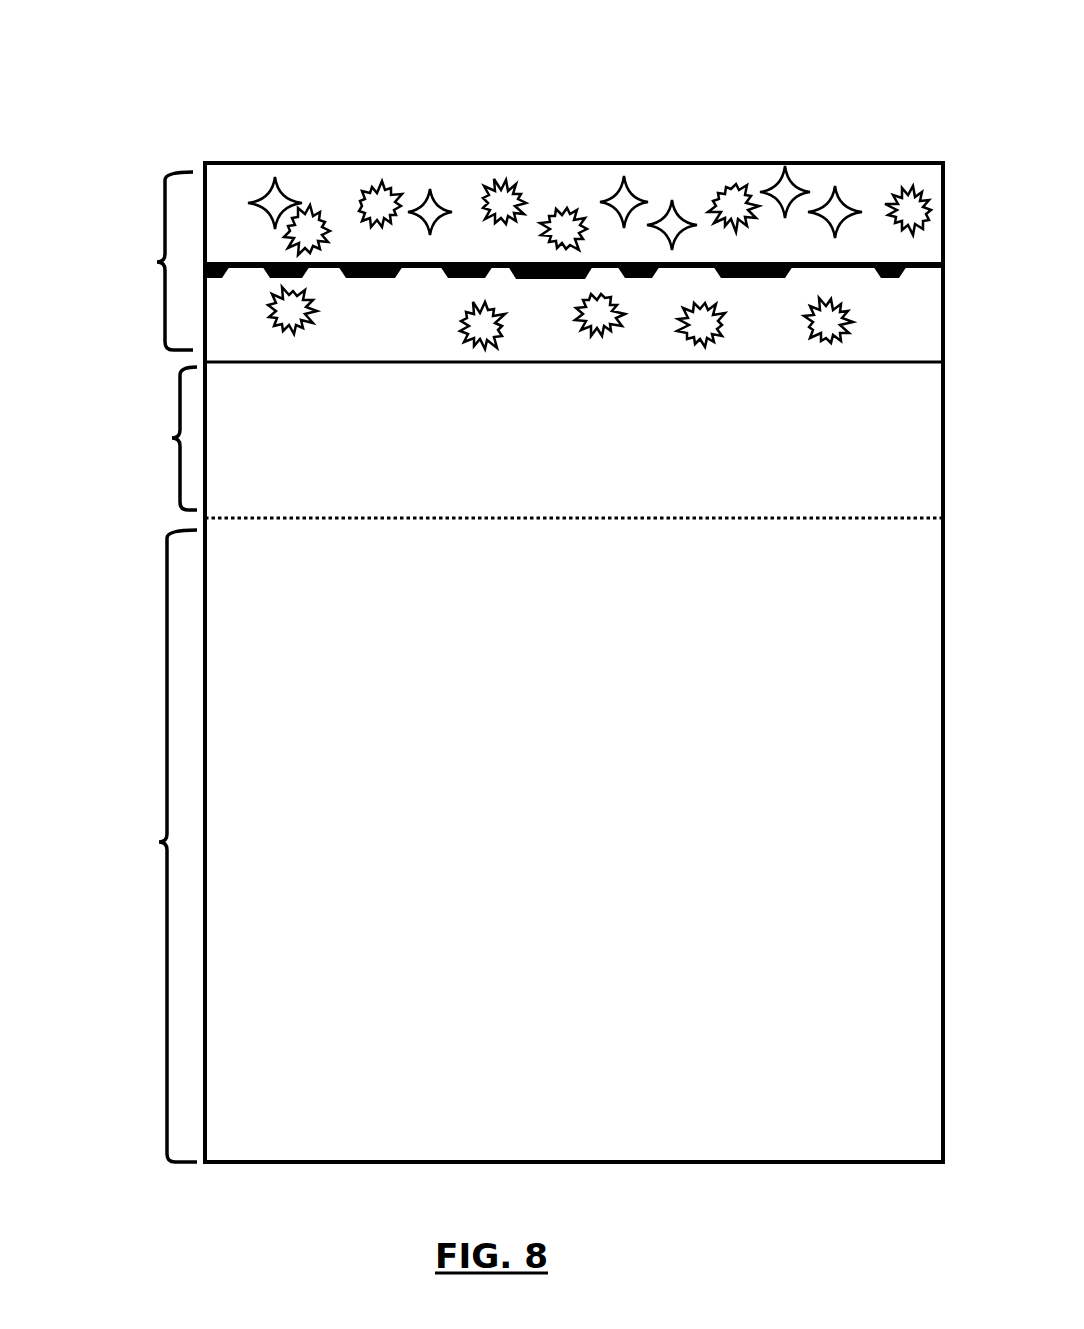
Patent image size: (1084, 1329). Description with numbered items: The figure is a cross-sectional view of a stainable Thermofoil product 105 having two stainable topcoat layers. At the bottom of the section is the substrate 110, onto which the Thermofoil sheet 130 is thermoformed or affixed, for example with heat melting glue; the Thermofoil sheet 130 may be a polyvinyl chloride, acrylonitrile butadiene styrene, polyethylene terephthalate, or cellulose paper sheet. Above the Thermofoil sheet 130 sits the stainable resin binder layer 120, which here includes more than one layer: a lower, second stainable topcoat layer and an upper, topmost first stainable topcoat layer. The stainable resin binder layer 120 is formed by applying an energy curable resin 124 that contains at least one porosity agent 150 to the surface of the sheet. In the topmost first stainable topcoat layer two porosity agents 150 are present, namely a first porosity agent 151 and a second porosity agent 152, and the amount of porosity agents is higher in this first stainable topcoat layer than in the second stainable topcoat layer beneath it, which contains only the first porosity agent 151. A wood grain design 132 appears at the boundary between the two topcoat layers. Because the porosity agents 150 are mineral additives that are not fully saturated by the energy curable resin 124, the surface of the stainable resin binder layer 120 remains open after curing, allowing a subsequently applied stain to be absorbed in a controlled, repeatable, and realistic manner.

The stainable Thermofoil product 105 is at (818, 140).
The substrate 110 is at (159, 842).
The stainable resin binder layer 120 is at (157, 262).
The energy curable resin 124 is at (698, 186).
The Thermofoil sheet 130 is at (172, 438).
The wood grain design 132 is at (230, 273).
The porosity agent 150 is at (357, 205).
The first porosity agent 151 is at (560, 318).
The second porosity agent 152 is at (608, 195).